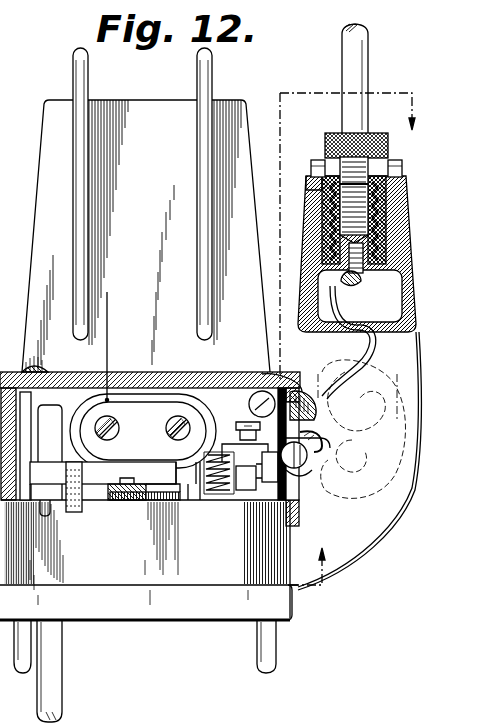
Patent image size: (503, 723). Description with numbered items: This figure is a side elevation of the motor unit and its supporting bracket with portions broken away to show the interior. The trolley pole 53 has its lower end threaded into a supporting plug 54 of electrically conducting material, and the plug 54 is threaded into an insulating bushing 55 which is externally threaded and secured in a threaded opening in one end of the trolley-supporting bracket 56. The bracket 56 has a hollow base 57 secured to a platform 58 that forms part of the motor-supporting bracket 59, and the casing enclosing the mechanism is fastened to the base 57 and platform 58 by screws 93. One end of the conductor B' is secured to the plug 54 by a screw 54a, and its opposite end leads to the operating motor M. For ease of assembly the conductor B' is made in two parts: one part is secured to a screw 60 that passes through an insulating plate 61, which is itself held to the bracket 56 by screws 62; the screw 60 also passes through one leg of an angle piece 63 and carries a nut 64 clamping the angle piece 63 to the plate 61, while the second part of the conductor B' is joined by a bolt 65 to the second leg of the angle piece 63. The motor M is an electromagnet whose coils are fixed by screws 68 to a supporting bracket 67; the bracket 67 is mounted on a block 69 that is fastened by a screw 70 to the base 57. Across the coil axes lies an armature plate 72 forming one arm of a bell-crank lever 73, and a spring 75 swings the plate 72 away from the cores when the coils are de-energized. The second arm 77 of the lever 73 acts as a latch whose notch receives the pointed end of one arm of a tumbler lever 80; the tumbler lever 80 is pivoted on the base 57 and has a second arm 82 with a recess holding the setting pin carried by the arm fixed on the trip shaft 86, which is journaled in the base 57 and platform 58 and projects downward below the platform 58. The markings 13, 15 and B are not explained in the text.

The motor-supporting bracket 59 is at (145, 100).
The trolley pole 53 is at (364, 62).
The supporting plug 54 is at (318, 160).
The section line 13 is at (349, 236).
The insulating bushing 55 is at (396, 212).
The trolley-supporting bracket 56 is at (404, 254).
The screw 54a is at (342, 288).
The conductor B' is at (302, 342).
The reference line B is at (117, 346).
The operating motor M is at (146, 406).
The screws 68 is at (177, 400).
The supporting bracket 67 is at (154, 439).
The bolt 65 is at (262, 388).
The screws 62 is at (263, 372).
The screws 93 is at (38, 362).
The armature plate 72 is at (70, 432).
The second arm of tumbler lever 82 is at (140, 478).
The block 69 is at (100, 496).
The screw 70 is at (80, 514).
The tumbler lever 80 is at (172, 500).
The spring 75 is at (210, 482).
The second arm of bell-crank lever 77 is at (226, 500).
The nut 64 is at (262, 482).
The angle piece 63 is at (274, 494).
The insulating plate 61 is at (268, 438).
The bell-crank lever 73 is at (238, 469).
The screw 60 is at (300, 470).
The section arrow 15 is at (330, 551).
The hollow base 57 is at (178, 563).
The platform 58 is at (195, 633).
The trip shaft 86 is at (62, 668).